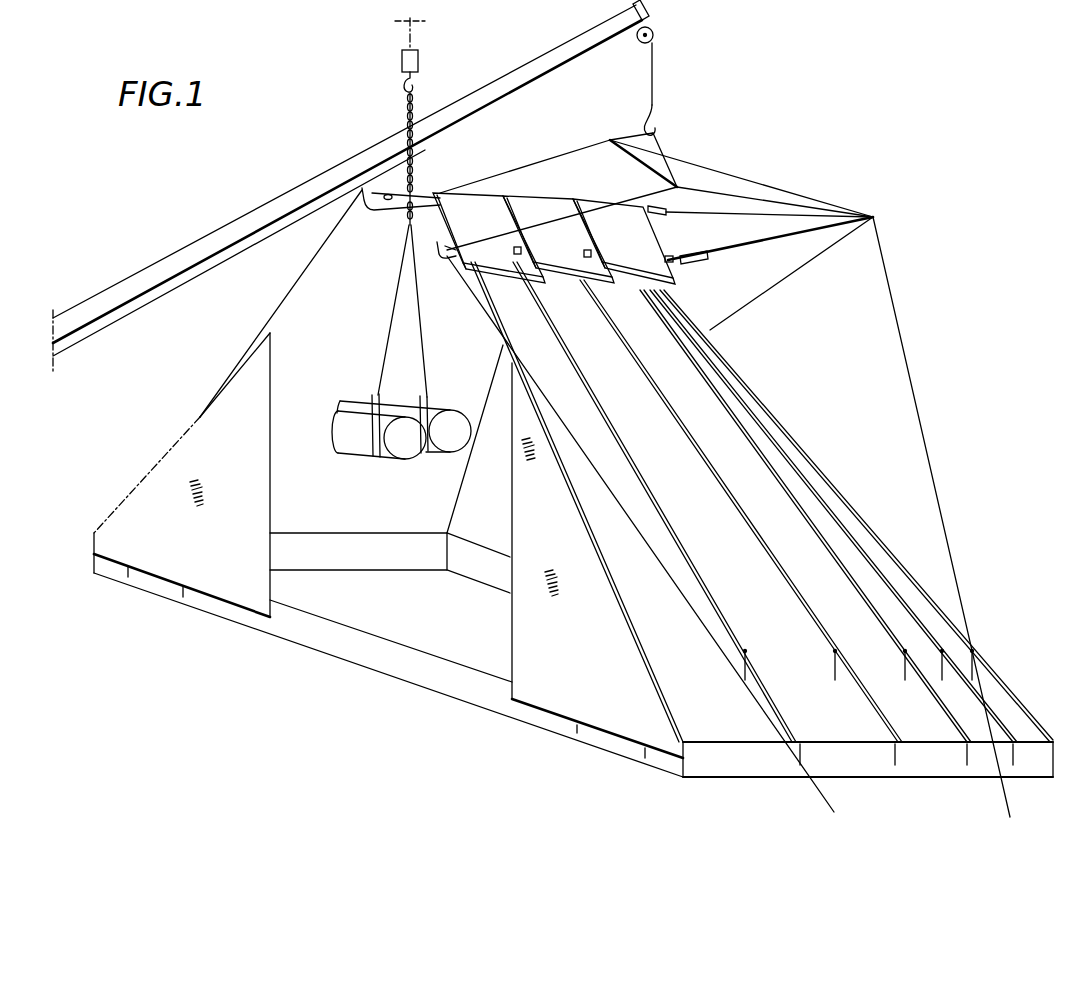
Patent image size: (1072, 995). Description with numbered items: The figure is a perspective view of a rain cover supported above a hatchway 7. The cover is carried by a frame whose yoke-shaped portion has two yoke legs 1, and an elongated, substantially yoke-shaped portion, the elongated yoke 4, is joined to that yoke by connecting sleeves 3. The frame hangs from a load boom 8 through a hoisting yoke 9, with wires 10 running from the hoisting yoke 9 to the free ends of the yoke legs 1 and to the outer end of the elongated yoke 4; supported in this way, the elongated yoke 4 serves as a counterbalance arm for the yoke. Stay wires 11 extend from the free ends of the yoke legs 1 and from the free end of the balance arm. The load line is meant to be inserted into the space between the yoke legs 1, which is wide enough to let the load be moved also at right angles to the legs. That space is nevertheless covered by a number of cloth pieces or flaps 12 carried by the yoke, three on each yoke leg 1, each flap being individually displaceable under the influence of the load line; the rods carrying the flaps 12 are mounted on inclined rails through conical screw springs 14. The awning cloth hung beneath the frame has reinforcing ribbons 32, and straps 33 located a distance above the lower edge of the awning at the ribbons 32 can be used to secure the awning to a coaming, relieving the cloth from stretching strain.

The yoke legs 1 is at (373, 212).
The connecting sleeves 3 is at (661, 214).
The elongated yoke 4 is at (750, 244).
The hatchway 7 is at (374, 618).
The load boom 8 is at (313, 187).
The hoisting yoke 9 is at (641, 164).
The wires 10 is at (557, 152).
The stay wires 11 is at (313, 256).
The flaps 12 is at (459, 198).
The conical screw spring 14 is at (584, 254).
The reinforcing ribbons 32 is at (581, 515).
The straps 33 is at (749, 676).